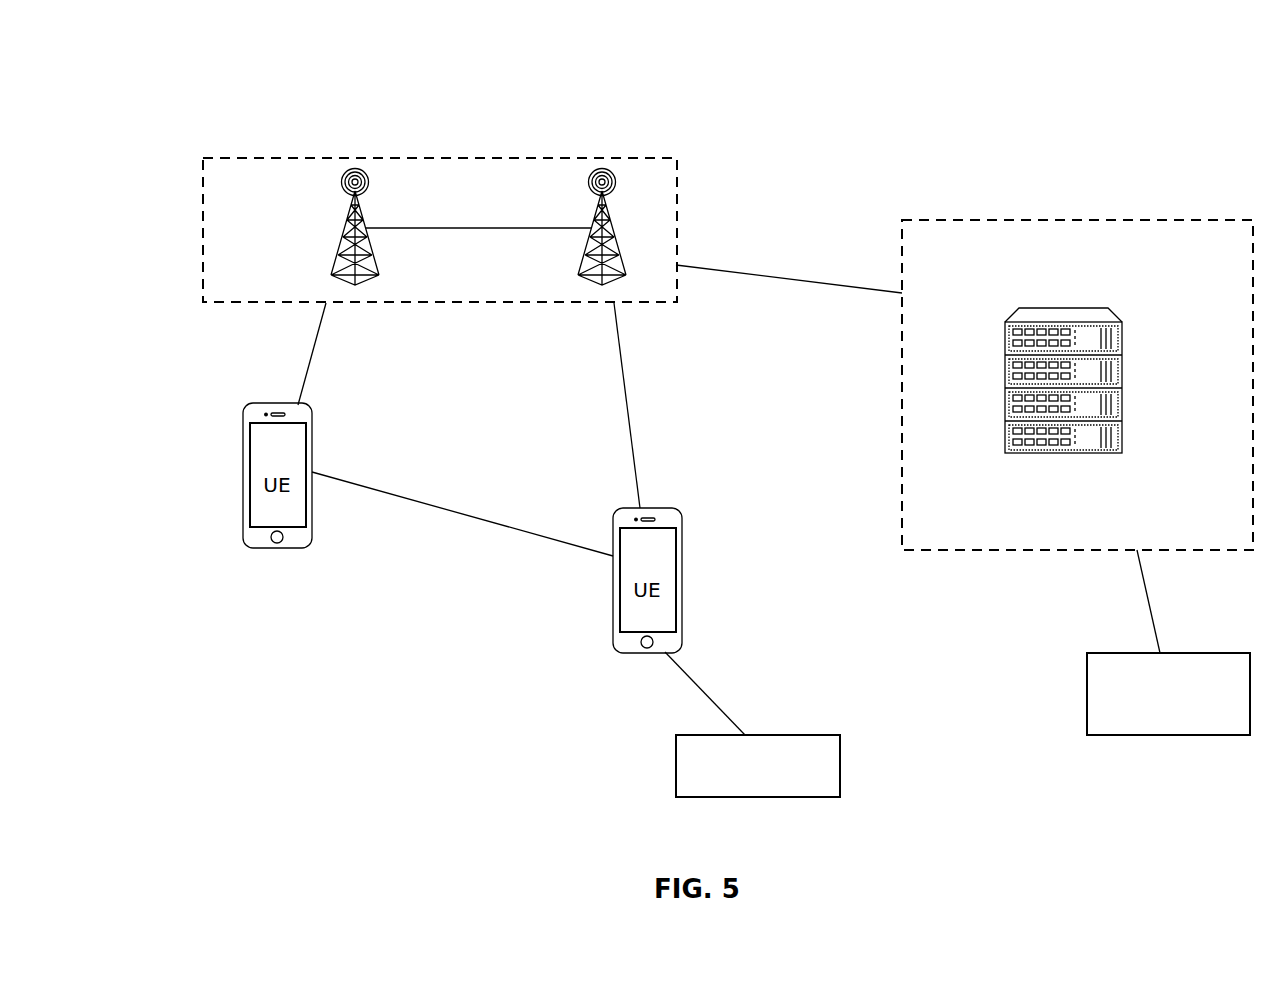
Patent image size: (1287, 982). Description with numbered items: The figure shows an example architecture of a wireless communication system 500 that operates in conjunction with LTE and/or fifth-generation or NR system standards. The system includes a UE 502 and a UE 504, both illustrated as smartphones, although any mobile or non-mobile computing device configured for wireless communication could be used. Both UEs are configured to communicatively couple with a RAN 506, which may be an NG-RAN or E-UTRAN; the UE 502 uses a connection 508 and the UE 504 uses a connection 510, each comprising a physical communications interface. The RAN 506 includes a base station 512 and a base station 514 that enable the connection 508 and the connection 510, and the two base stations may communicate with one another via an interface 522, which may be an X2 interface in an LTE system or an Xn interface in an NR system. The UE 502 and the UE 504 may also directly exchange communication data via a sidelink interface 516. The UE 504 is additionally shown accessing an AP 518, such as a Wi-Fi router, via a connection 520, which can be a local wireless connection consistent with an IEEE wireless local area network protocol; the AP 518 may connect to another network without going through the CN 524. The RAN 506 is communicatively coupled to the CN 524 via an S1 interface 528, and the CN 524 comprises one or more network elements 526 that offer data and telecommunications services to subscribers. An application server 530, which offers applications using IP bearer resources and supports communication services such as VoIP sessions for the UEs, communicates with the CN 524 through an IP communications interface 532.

The wireless communication system 500 is at (1171, 84).
The UE 502 is at (243, 440).
The UE 504 is at (682, 541).
The RAN 506 is at (440, 157).
The connection 508 is at (318, 338).
The connection 510 is at (625, 389).
The base station 512 is at (348, 194).
The base station 514 is at (596, 194).
The sidelink interface 516 is at (452, 511).
The AP 518 is at (677, 775).
The connection 520 is at (687, 678).
The interface 522 is at (431, 229).
The CN 524 is at (1080, 220).
The network elements 526 is at (1122, 342).
The S1 interface 528 is at (757, 275).
The application server 530 is at (1087, 672).
The IP communications interface 532 is at (1152, 608).